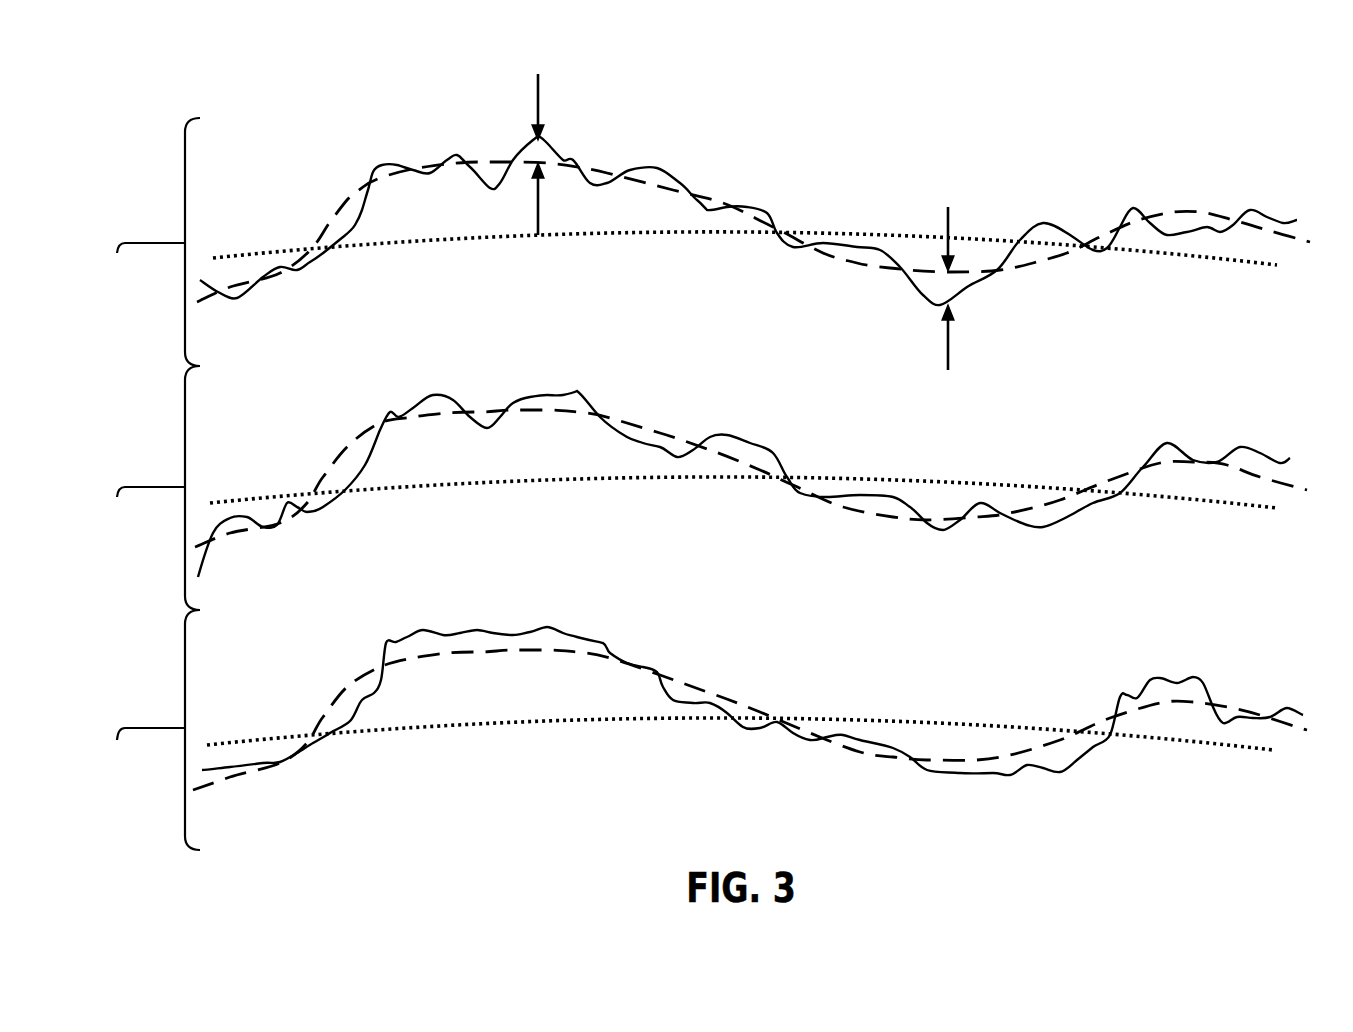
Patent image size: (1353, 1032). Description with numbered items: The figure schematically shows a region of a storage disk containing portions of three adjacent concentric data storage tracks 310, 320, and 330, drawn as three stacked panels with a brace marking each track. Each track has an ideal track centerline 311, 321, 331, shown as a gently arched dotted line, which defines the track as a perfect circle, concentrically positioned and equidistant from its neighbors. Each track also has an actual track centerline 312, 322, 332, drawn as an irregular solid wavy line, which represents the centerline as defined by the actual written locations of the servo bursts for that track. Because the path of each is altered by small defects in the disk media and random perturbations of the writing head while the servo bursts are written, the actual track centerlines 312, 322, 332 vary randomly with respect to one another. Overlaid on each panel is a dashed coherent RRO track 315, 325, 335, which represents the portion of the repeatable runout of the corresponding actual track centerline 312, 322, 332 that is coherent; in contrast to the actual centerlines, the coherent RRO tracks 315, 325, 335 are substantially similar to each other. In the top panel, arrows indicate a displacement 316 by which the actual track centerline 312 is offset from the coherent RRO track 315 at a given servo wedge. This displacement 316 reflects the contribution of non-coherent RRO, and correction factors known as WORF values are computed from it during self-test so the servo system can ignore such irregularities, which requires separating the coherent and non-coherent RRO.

The track 310 is at (703, 221).
The ideal track centerline 311 is at (623, 234).
The actual track centerline 312 is at (528, 150).
The coherent RRO track 315 is at (331, 222).
The displacement 316 is at (540, 113).
The track 320 is at (701, 484).
The ideal track centerline 321 is at (545, 482).
The actual track centerline 322 is at (562, 397).
The coherent RRO track 325 is at (330, 467).
The track 330 is at (699, 725).
The ideal track centerline 331 is at (545, 722).
The actual track centerline 332 is at (562, 638).
The coherent RRO track 335 is at (330, 713).